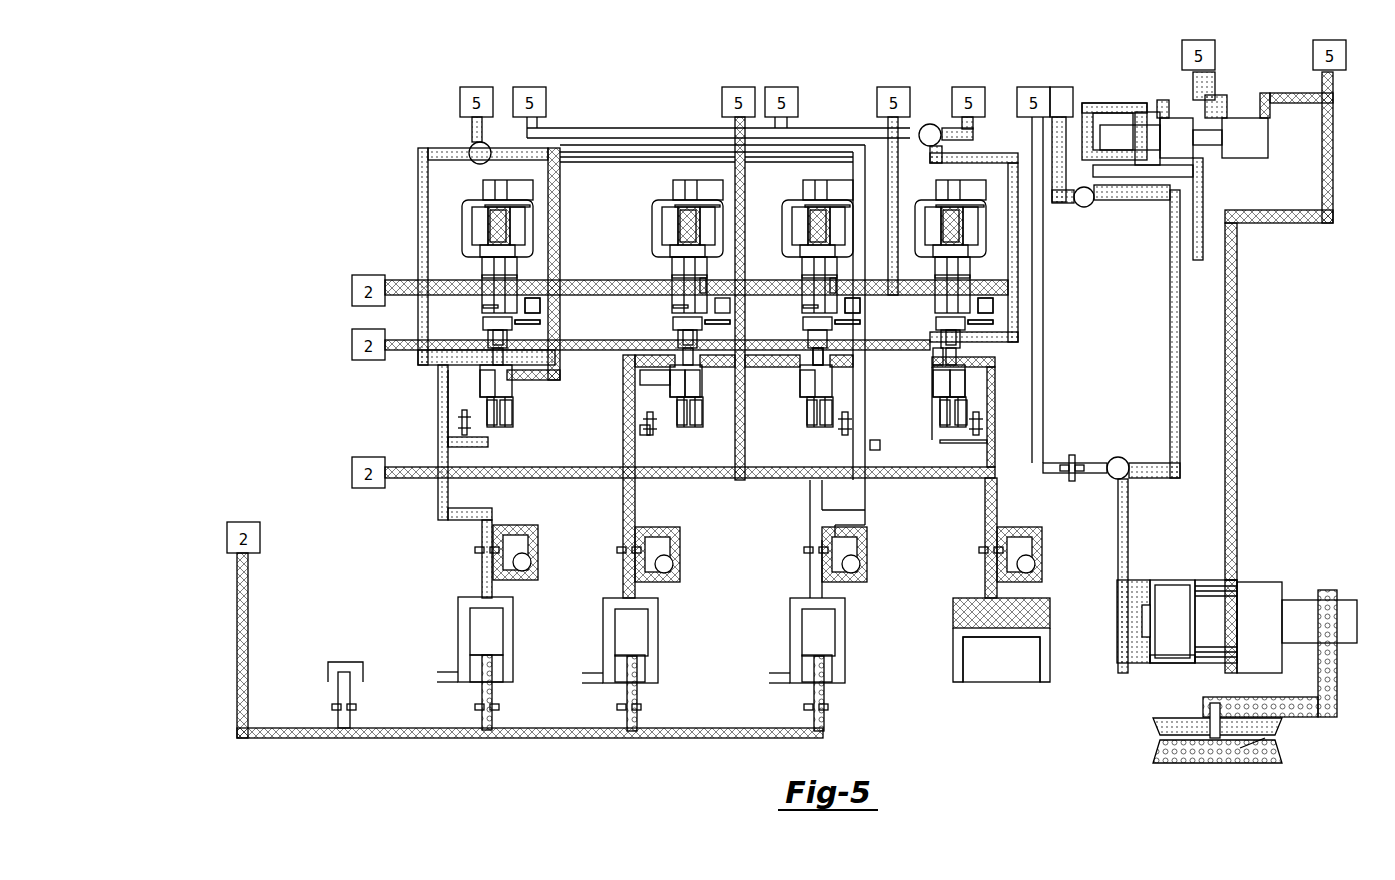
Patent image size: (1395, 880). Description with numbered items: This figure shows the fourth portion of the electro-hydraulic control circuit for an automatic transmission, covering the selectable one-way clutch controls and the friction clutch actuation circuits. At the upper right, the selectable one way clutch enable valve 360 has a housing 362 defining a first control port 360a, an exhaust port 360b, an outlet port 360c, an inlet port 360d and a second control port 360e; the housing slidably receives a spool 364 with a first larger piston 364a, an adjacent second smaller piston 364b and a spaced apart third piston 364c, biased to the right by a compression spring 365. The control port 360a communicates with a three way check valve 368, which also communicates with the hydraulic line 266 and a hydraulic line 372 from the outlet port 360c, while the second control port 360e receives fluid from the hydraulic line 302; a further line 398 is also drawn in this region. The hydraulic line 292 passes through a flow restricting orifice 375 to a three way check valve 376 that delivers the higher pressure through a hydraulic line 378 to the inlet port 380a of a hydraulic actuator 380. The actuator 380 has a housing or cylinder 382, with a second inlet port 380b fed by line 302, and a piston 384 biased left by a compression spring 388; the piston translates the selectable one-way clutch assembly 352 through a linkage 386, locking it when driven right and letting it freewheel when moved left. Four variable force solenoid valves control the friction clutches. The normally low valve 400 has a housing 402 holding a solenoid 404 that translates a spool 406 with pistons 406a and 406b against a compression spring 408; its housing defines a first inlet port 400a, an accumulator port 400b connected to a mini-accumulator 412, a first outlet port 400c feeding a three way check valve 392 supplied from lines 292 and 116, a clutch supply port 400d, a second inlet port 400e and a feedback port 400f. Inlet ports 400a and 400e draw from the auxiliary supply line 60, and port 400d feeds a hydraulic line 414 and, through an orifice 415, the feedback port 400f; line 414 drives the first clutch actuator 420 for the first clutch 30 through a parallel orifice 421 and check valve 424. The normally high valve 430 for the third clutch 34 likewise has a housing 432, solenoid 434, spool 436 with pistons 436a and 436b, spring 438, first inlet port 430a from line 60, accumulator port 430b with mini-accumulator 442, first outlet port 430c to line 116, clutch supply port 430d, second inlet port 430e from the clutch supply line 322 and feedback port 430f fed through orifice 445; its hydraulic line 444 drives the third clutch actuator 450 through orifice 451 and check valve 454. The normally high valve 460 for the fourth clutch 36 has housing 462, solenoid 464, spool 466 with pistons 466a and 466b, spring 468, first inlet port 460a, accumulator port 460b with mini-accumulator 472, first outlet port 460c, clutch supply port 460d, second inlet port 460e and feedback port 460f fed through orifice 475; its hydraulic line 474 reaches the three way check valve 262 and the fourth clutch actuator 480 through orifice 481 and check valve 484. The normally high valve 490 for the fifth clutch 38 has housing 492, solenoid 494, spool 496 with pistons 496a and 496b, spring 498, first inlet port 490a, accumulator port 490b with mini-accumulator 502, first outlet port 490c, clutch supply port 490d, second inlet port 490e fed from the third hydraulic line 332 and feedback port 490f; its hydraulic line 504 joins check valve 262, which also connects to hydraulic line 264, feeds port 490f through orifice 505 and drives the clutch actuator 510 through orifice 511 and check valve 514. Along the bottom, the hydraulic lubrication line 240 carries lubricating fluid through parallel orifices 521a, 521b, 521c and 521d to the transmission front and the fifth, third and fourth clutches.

The first clutch 30 is at (995, 668).
The third clutch 34 is at (655, 680).
The fourth clutch 36 is at (843, 680).
The fifth clutch 38 is at (515, 680).
The auxiliary supply line 60 is at (588, 282).
The hydraulic line 116 is at (888, 125).
The hydraulic lubrication line 240 is at (318, 740).
The three way check valve 262 is at (470, 150).
The hydraulic line 264 is at (488, 120).
The hydraulic line 266 is at (1062, 120).
The hydraulic line 292 is at (638, 145).
The hydraulic line 302 is at (1237, 325).
The clutch supply line 322 is at (735, 122).
The third hydraulic line 332 is at (560, 232).
The selectable one-way clutch assembly 352 is at (1170, 718).
The selectable one way clutch enable valve 360 is at (1147, 215).
The first control port 360a is at (1110, 202).
The exhaust port 360b is at (1172, 110).
The outlet port 360c is at (1198, 200).
The inlet port 360d is at (1222, 110).
The second control port 360e is at (1270, 112).
The housing 362 is at (1110, 172).
The spool 364 is at (1120, 128).
The first, larger piston 364a is at (1147, 125).
The second, smaller piston 364b is at (1167, 148).
The third piston 364c is at (1236, 148).
The compression spring 365 is at (1100, 110).
The three way check valve 368 is at (1082, 208).
The hydraulic line 372 is at (1170, 345).
The flow restricting orifice 375 is at (1078, 457).
The three way check valve 376 is at (1120, 457).
The hydraulic line 378 is at (1128, 518).
The hydraulic actuator 380 is at (1090, 660).
The inlet port 380a is at (1125, 585).
The second inlet port 380b is at (1237, 578).
The housing or cylinder 382 is at (1168, 665).
The piston 384 is at (1163, 634).
The linkage 386 is at (1337, 685).
The compression spring 388 is at (1220, 598).
The three way check valve 392 is at (928, 124).
The hydraulic line 398 is at (1018, 278).
The normally low variable force solenoid valve 400 is at (975, 165).
The first inlet port 400a is at (968, 292).
The accumulator port 400b is at (990, 322).
The first outlet port 400c is at (935, 356).
The second outlet or clutch supply port 400d is at (938, 385).
The second inlet port 400e is at (965, 378).
The feedback port 400f is at (975, 438).
The housing 402 is at (982, 210).
The solenoid 404 is at (950, 228).
The spool 406 is at (975, 367).
The piston 406a is at (960, 340).
The piston 406b is at (965, 390).
The compression spring 408 is at (952, 428).
The mini-accumulator 412 is at (993, 305).
The hydraulic line 414 is at (998, 505).
The flow restricting orifice 415 is at (990, 443).
The first clutch actuator 420 is at (1055, 632).
The flow restricting orifice 421 is at (980, 552).
The check valve 424 is at (1020, 565).
The normally high variable force solenoid valve 430 is at (645, 212).
The first inlet port 430a is at (668, 290).
The accumulator port 430b is at (712, 325).
The first outlet port 430c is at (672, 325).
The second outlet or clutch supply port 430d is at (682, 348).
The second inlet port 430e is at (695, 395).
The feedback port 430f is at (655, 435).
The housing 432 is at (718, 220).
The solenoid 434 is at (686, 240).
The spool 436 is at (690, 415).
The piston 436a is at (690, 380).
The piston 436b is at (640, 385).
The compression spring 438 is at (698, 427).
The mini-accumulator 442 is at (708, 293).
The hydraulic line 444 is at (636, 508).
The flow restricting orifice 445 is at (642, 430).
The third clutch actuator 450 is at (670, 652).
The flow restricting orifice 451 is at (617, 552).
The check valve 454 is at (670, 565).
The normally high variable force solenoid valve 460 is at (788, 210).
The first inlet port 460a is at (800, 292).
The accumulator port 460b is at (860, 310).
The first outlet port 460c is at (858, 324).
The second outlet or clutch supply port 460d is at (805, 380).
The second inlet port 460e is at (878, 447).
The feedback port 460f is at (845, 465).
The housing 462 is at (850, 205).
The solenoid 464 is at (815, 240).
The spool 466 is at (812, 358).
The piston 466a is at (802, 325).
The piston 466b is at (812, 415).
The compression spring 468 is at (828, 428).
The mini-accumulator 472 is at (860, 295).
The hydraulic line 474 is at (600, 137).
The flow restricting orifice 475 is at (845, 435).
The fourth clutch actuator 480 is at (855, 652).
The flow restricting orifice 481 is at (805, 552).
The check valve 484 is at (857, 565).
The normally high variable force solenoid valve 490 is at (445, 195).
The first inlet port 490a is at (480, 290).
The accumulator port 490b is at (520, 325).
The first outlet port 490c is at (490, 345).
The second outlet or clutch supply port 490d is at (510, 357).
The second inlet port 490e is at (516, 376).
The feedback port 490f is at (475, 440).
The housing 492 is at (530, 210).
The solenoid 494 is at (496, 228).
The spool 496 is at (500, 410).
The piston 496a is at (485, 322).
The piston 496b is at (490, 388).
The compression spring 498 is at (510, 425).
The mini-accumulator 502 is at (540, 305).
The hydraulic line 504 is at (418, 238).
The flow restricting orifice 505 is at (460, 418).
The clutch actuator 510 is at (525, 652).
The flow restricting orifice 511 is at (475, 552).
The check valve 514 is at (530, 565).
The parallel orifice 521a is at (332, 705).
The parallel orifice 521b is at (475, 705).
The parallel orifice 521c is at (617, 705).
The parallel orifice 521d is at (805, 705).